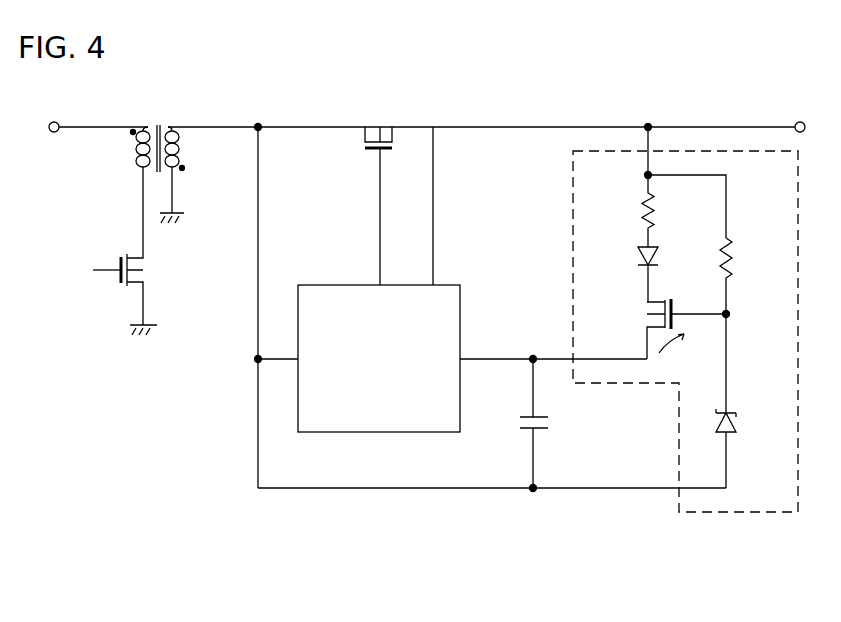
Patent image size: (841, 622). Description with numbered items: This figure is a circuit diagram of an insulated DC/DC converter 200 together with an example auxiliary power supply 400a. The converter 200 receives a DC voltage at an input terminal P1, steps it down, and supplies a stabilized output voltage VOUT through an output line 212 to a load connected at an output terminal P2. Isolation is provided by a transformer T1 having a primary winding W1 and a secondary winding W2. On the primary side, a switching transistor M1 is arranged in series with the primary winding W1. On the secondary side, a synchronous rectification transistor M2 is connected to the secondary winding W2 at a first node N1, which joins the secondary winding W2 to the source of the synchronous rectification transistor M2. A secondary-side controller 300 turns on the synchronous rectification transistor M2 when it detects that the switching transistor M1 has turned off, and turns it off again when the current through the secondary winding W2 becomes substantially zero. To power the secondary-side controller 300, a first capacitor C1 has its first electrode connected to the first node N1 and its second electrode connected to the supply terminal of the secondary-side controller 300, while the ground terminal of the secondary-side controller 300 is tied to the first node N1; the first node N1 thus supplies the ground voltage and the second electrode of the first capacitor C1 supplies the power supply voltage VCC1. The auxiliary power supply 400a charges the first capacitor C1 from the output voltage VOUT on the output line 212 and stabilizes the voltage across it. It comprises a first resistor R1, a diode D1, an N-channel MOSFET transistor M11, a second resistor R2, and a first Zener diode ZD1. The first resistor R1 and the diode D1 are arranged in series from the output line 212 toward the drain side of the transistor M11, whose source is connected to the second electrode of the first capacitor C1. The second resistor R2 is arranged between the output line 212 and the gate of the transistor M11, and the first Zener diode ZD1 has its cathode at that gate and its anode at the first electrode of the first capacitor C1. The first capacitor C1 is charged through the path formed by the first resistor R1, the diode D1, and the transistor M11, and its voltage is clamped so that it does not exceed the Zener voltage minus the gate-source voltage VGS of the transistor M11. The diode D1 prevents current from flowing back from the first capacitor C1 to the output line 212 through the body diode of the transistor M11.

The input terminal P1 is at (52, 121).
The output terminal P2 is at (802, 121).
The transformer T1 is at (161, 151).
The primary winding W1 is at (130, 153).
The secondary winding W2 is at (184, 153).
The first node N1 is at (259, 122).
The switching transistor M1 is at (123, 289).
The synchronous rectification transistor M2 is at (379, 122).
The output line 212 is at (585, 125).
The secondary-side controller 300 is at (378, 433).
The power supply voltage VCC1 is at (535, 346).
The first capacitor C1 is at (513, 430).
The first resistor R1 is at (636, 208).
The diode D1 is at (636, 256).
The transistor M11 is at (644, 315).
The second resistor R2 is at (738, 262).
The first Zener diode ZD1 is at (742, 421).
The auxiliary power supply 400a is at (685, 360).
The DC/DC converter 200 is at (452, 596).
The output voltage VOUT is at (735, 112).
The gate-source voltage VGS is at (685, 357).